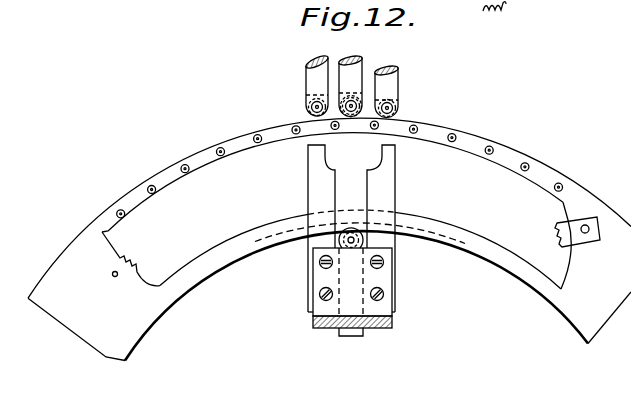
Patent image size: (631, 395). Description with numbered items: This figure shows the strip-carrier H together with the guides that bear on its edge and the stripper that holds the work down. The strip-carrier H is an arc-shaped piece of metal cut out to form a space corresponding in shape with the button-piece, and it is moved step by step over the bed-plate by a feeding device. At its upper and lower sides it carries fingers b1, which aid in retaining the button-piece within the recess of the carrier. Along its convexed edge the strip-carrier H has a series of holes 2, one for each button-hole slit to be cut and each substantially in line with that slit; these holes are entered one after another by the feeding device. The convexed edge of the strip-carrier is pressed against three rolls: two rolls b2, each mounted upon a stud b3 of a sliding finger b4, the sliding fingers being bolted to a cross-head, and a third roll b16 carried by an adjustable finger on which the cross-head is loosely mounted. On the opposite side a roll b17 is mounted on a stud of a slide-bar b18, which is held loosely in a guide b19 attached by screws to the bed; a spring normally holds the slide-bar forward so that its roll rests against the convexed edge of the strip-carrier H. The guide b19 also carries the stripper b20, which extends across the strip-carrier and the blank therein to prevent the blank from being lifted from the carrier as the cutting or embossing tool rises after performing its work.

The strip-carrier H is at (329, 239).
The holes 2 is at (255, 136).
The fingers b1 is at (557, 229).
The rolls b2 is at (307, 108).
The studs b3 is at (309, 106).
The sliding fingers b4 is at (316, 61).
The roll b16 is at (365, 106).
The roll b17 is at (341, 242).
The slide-bar b18 is at (352, 336).
The guide b19 is at (378, 278).
The stripper b20 is at (352, 228).